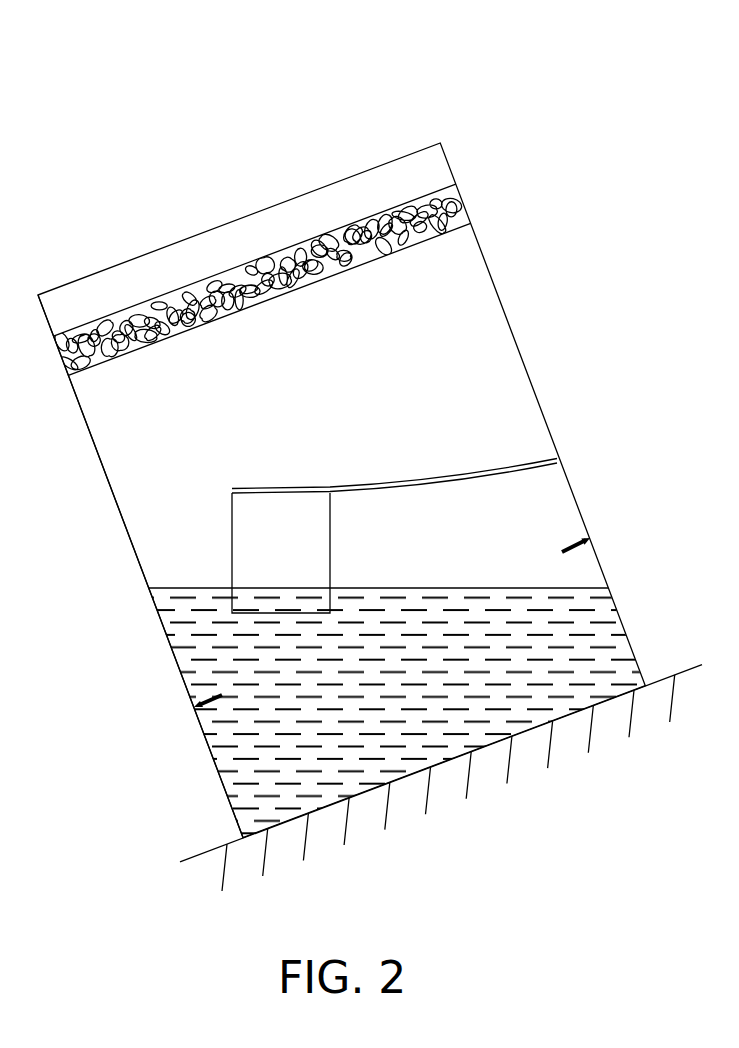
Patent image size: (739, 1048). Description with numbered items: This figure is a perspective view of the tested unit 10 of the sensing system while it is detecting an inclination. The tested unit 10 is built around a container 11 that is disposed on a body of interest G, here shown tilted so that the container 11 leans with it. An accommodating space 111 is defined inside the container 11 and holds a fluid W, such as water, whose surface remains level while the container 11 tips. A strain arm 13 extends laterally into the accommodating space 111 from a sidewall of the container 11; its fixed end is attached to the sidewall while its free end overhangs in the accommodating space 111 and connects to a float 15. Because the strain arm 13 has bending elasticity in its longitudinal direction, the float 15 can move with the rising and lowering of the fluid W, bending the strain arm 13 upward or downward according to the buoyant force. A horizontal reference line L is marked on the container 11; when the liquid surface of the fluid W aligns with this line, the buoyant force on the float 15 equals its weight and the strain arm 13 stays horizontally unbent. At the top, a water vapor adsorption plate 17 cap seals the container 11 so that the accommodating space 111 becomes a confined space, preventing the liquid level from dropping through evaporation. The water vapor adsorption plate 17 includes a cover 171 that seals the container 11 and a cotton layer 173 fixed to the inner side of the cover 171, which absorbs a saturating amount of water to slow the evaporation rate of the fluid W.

The tested unit 10 is at (331, 73).
The container 11 is at (340, 490).
The accommodating space 111 is at (140, 566).
The strain arm 13 is at (348, 492).
The float 15 is at (324, 531).
The water vapor adsorption plate 17 is at (261, 279).
The cover 171 is at (255, 260).
The cotton layer 173 is at (482, 257).
The fluid W is at (465, 594).
The horizontal reference line L is at (582, 535).
The body of interest G is at (194, 856).